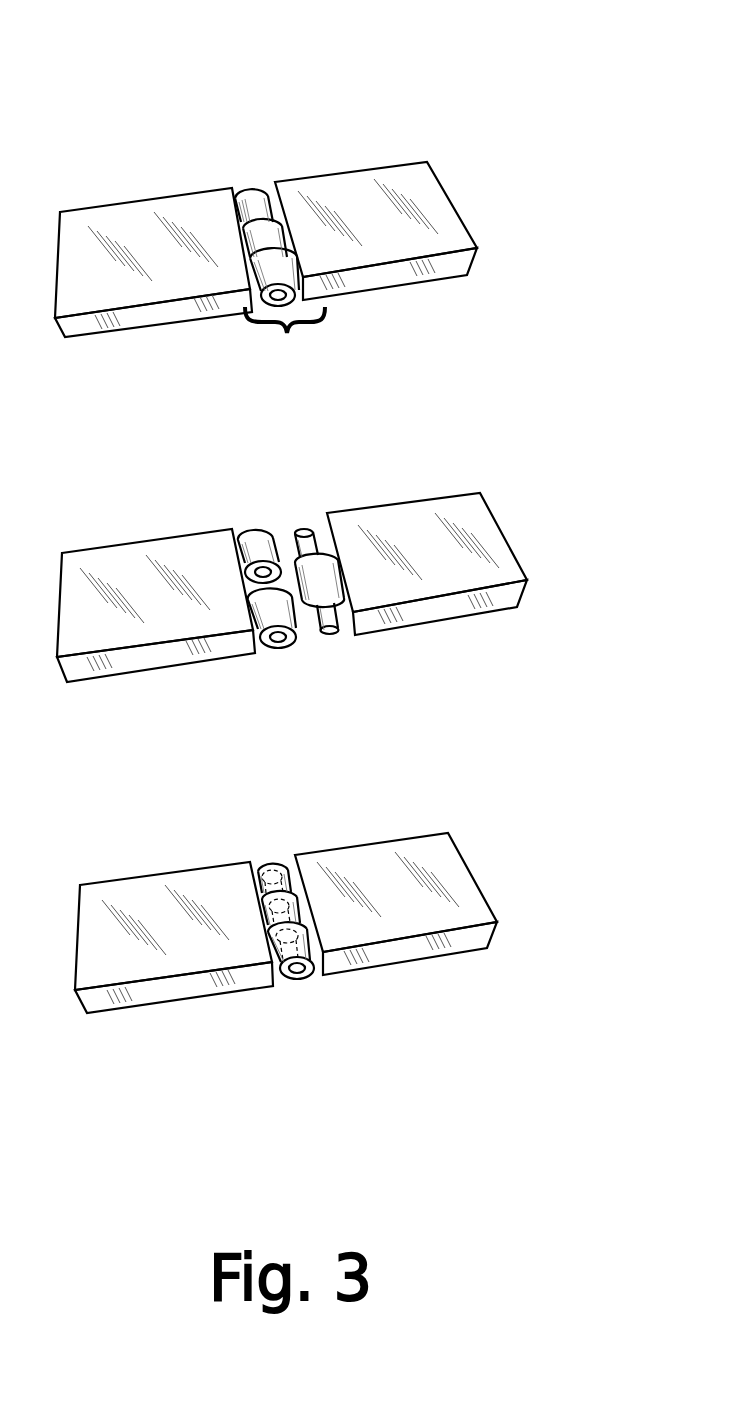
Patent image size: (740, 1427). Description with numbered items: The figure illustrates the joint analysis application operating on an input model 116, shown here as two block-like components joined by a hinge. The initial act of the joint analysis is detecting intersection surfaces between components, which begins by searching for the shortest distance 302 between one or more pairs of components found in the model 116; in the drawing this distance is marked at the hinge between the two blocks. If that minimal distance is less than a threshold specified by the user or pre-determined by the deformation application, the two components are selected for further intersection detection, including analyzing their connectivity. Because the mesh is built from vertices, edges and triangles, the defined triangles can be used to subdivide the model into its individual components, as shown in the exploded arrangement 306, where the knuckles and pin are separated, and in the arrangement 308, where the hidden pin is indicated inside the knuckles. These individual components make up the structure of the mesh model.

The model 116 is at (495, 55).
The shortest distance 302 is at (305, 362).
The subdivided model illustration 306 is at (528, 494).
The subdivided model illustration 308 is at (523, 825).